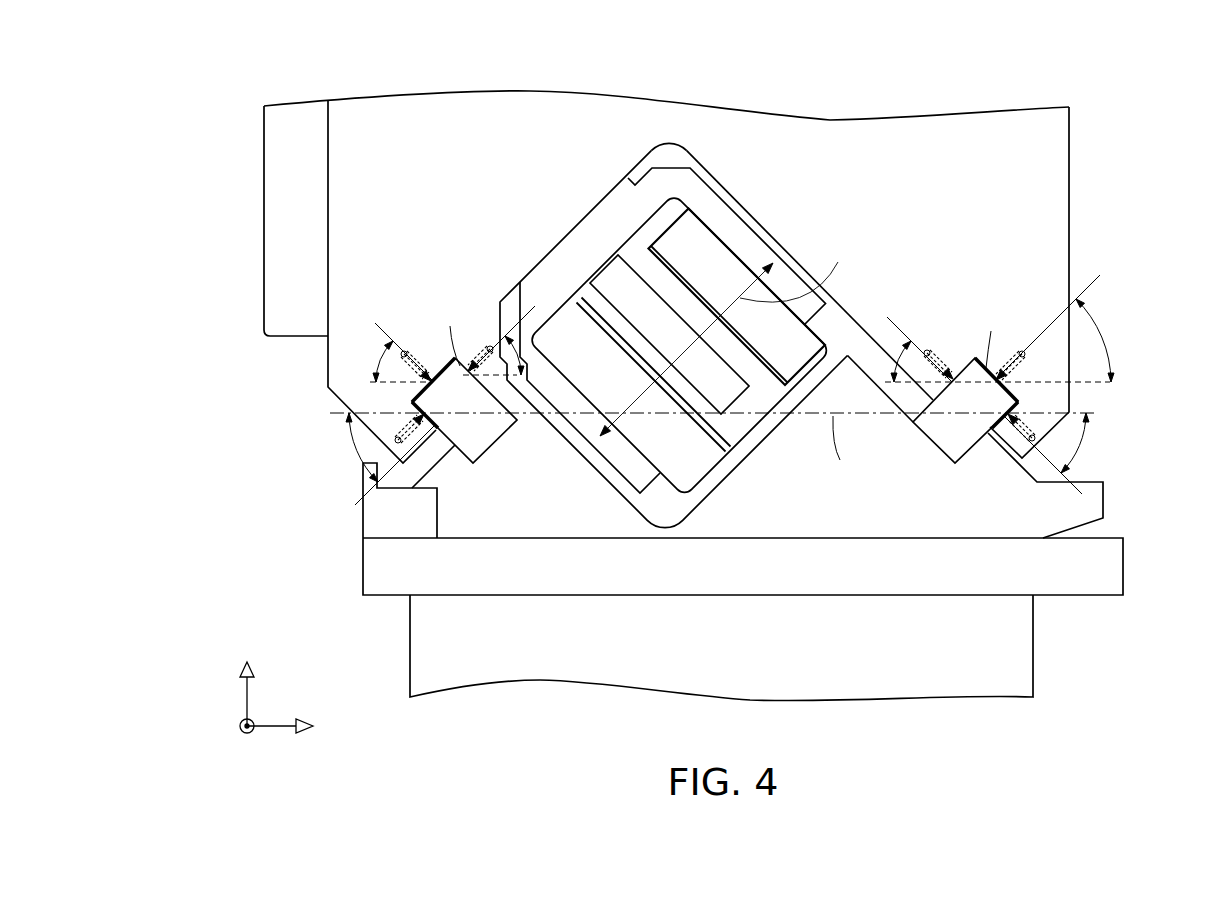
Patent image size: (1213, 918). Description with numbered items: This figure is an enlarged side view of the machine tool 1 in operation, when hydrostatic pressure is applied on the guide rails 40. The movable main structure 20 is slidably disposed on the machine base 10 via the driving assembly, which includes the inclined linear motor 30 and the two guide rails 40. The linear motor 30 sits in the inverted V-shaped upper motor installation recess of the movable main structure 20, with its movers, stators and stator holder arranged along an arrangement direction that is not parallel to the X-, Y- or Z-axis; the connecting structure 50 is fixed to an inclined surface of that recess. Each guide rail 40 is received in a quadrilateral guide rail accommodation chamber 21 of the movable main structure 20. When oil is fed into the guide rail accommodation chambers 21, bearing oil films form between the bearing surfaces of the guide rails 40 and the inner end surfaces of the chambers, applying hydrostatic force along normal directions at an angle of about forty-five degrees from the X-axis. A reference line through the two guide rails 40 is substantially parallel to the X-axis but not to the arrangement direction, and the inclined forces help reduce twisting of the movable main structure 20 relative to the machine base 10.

The machine tool 1 is at (201, 71).
The machine base 10 is at (1123, 512).
The movable main structure 20 is at (1080, 186).
The guide rail accommodation chamber 21 is at (444, 362).
The linear motor 30 is at (702, 281).
The guide rail 40 is at (484, 430).
The connecting structure 50 is at (590, 237).